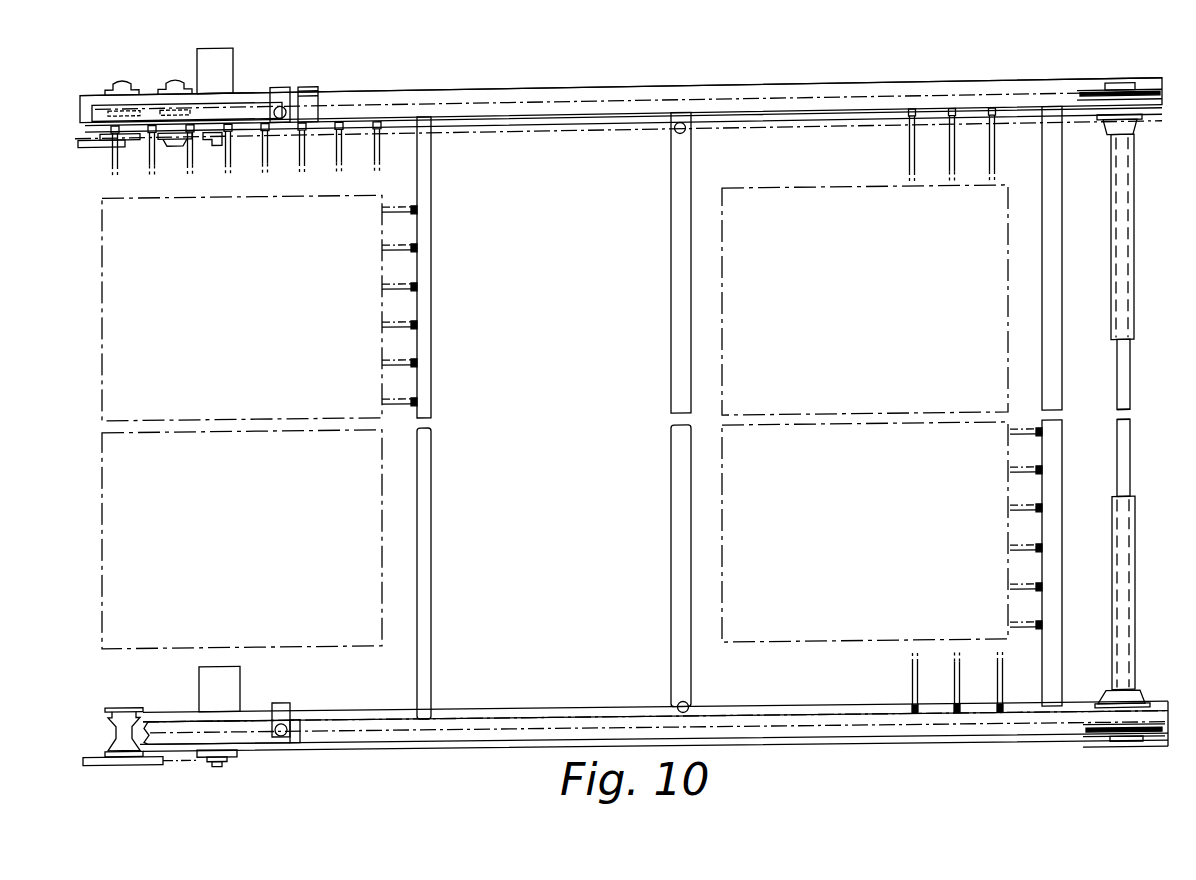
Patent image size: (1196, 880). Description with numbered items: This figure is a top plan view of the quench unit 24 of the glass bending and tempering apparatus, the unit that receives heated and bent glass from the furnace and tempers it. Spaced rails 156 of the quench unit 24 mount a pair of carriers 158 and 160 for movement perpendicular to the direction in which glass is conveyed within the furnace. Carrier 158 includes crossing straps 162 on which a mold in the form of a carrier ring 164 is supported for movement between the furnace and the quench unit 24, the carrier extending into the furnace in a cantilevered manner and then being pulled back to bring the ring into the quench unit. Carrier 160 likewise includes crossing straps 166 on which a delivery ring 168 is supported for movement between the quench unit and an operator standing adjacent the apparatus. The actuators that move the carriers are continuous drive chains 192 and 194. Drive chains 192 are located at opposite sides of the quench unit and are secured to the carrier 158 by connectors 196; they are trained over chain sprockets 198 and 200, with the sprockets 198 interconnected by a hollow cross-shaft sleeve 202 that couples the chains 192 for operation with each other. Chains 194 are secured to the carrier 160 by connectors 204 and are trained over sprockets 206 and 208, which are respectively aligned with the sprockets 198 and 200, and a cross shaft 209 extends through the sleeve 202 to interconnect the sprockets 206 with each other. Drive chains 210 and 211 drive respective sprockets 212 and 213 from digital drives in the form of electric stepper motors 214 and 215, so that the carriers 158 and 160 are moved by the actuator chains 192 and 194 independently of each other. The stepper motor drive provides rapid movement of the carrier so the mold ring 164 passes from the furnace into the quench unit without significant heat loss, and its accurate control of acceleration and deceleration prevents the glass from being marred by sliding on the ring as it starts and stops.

The quench unit 24 is at (874, 82).
The spaced rails 156 is at (572, 89).
The carrier 158 is at (746, 735).
The carrier 160 is at (273, 736).
The crossing straps 162 is at (1044, 589).
The carrier ring 164 is at (1004, 302).
The crossing straps 166 is at (345, 152).
The delivery ring 168 is at (385, 521).
The drive chains 192 is at (561, 128).
The drive chains 194 is at (694, 106).
The connectors 196 is at (685, 130).
The chain sprockets 198 is at (1142, 121).
The chain sprockets 200 is at (110, 133).
The hollow cross-shaft sleeve 202 is at (1112, 332).
The connectors 204 is at (280, 106).
The sprockets 206 is at (1141, 87).
The sprockets 208 is at (121, 98).
The cross shaft 209 is at (1128, 415).
The drive chain 210 is at (183, 763).
The drive chain 211 is at (172, 156).
The sprocket 212 is at (90, 763).
The sprocket 213 is at (82, 143).
The electric stepper motor 214 is at (225, 690).
The electric stepper motor 215 is at (202, 62).